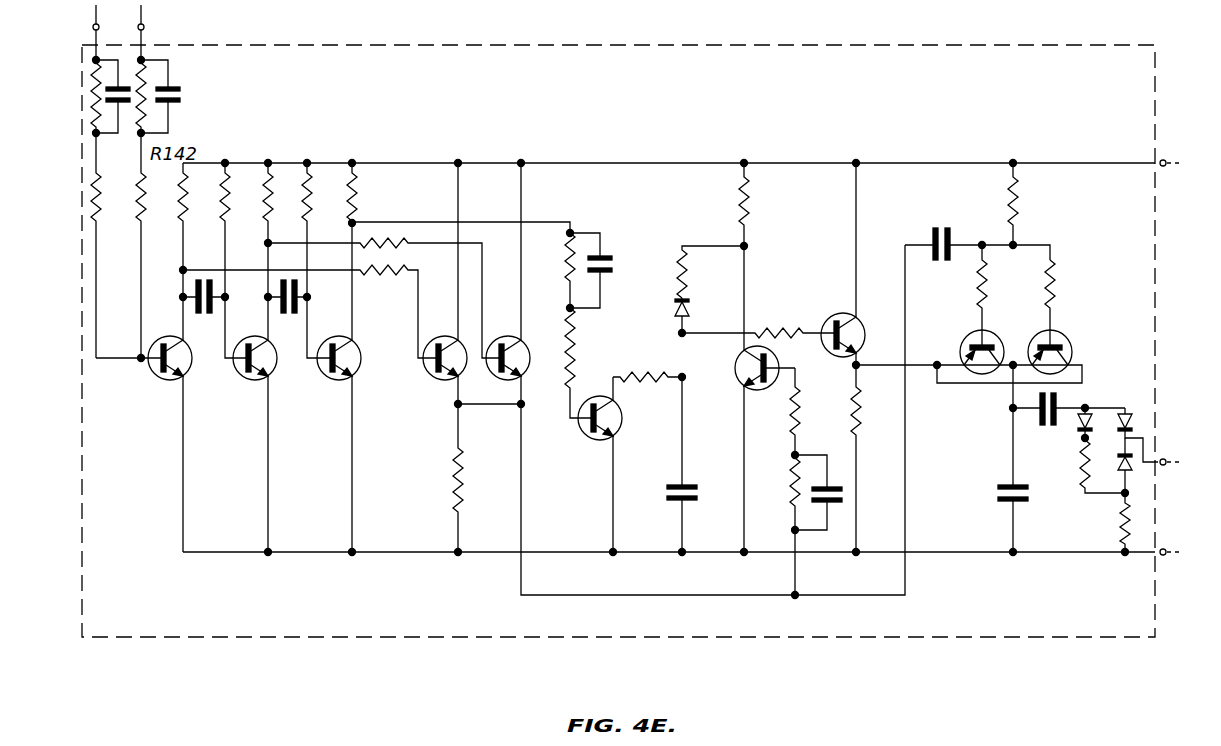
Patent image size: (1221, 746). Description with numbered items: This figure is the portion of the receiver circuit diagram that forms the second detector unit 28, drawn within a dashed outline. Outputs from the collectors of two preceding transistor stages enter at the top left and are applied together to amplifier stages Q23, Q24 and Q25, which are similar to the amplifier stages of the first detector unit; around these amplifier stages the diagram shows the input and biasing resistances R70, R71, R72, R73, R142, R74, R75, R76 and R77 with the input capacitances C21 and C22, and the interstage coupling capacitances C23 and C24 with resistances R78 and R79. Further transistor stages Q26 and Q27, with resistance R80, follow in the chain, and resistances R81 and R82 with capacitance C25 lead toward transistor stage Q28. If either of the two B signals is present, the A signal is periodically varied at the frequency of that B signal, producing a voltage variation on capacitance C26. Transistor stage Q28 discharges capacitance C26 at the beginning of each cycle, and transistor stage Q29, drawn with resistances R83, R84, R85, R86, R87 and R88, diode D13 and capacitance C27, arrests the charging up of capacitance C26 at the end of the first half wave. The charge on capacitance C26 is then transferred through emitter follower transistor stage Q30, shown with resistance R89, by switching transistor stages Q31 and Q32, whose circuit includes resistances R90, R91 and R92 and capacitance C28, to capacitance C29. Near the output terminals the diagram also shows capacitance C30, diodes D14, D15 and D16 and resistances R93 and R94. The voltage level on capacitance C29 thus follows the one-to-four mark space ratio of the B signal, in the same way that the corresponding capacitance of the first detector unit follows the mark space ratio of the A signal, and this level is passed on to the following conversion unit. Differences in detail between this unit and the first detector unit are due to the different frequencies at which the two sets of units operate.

The second detector unit 28 is at (343, 44).
The resistor R70 is at (99, 210).
The resistor R71 is at (152, 92).
The resistor R72 is at (133, 210).
The resistor R73 is at (178, 210).
The resistor R74 is at (227, 208).
The resistor R75 is at (288, 166).
The resistor R76 is at (322, 165).
The resistor R77 is at (370, 168).
The resistor R78 is at (396, 243).
The resistor R79 is at (366, 270).
The resistor R80 is at (455, 500).
The resistor R81 is at (568, 265).
The resistor R82 is at (564, 372).
The resistor R83 is at (740, 212).
The resistor R84 is at (680, 272).
The resistor R85 is at (673, 380).
The resistor R86 is at (788, 330).
The resistor R87 is at (790, 430).
The resistor R88 is at (790, 520).
The resistor R89 is at (860, 430).
The resistor R90 is at (1020, 180).
The resistor R91 is at (978, 268).
The resistor R92 is at (1052, 270).
The resistor R93 is at (1080, 462).
The resistor R94 is at (1120, 540).
The resistor R142 is at (185, 208).
The capacitor C21 is at (118, 86).
The capacitor C22 is at (180, 104).
The capacitor C23 is at (203, 315).
The capacitor C24 is at (290, 315).
The capacitor C25 is at (601, 256).
The capacitance C26 is at (668, 486).
The capacitor C27 is at (835, 505).
The capacitor C28 is at (930, 238).
The capacitance C29 is at (996, 490).
The capacitor C30 is at (1037, 408).
The amplifier stage Q23 is at (156, 378).
The amplifier stage Q24 is at (248, 380).
The amplifier stage Q25 is at (360, 364).
The transistor Q26 is at (430, 378).
The transistor Q27 is at (497, 380).
The transistor stage Q28 is at (590, 440).
The transistor stage Q29 is at (740, 362).
The emitter follower transistor stage Q30 is at (845, 313).
The switching transistor stage Q31 is at (962, 348).
The switching transistor stage Q32 is at (1068, 342).
The diode D13 is at (674, 313).
The diode D14 is at (1075, 425).
The diode D15 is at (1133, 420).
The diode D16 is at (1118, 465).